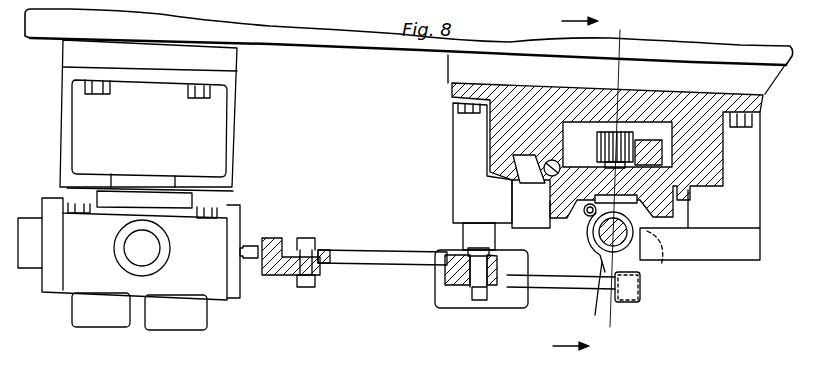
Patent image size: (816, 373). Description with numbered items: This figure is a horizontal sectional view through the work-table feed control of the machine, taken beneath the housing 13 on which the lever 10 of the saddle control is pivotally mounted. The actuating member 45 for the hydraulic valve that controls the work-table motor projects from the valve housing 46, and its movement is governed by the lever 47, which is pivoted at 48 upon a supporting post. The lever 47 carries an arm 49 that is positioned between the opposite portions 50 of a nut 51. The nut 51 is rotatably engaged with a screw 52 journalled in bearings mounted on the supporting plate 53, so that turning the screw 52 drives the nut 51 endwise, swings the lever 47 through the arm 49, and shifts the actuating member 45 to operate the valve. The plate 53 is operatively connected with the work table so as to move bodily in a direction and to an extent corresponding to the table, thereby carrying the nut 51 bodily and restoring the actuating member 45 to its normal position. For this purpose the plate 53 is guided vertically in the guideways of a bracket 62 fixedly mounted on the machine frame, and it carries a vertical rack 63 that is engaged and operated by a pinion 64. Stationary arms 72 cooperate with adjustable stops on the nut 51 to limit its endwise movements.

The lever 10 is at (630, 32).
The housing 13 is at (404, 43).
The actuating member 45 is at (369, 257).
The housing for the hydraulic valve 46 is at (205, 273).
The lever 47 is at (463, 272).
The pivot 48 is at (515, 233).
The arm 49 is at (560, 283).
The opposite portions of nut 50 is at (632, 299).
The nut 51 is at (618, 331).
The screw 52 is at (593, 240).
The supporting plate 53 is at (672, 200).
The bracket 62 is at (488, 176).
The vertical rack 63 is at (655, 150).
The pinion 64 is at (603, 142).
The stationary arms 72 is at (666, 256).